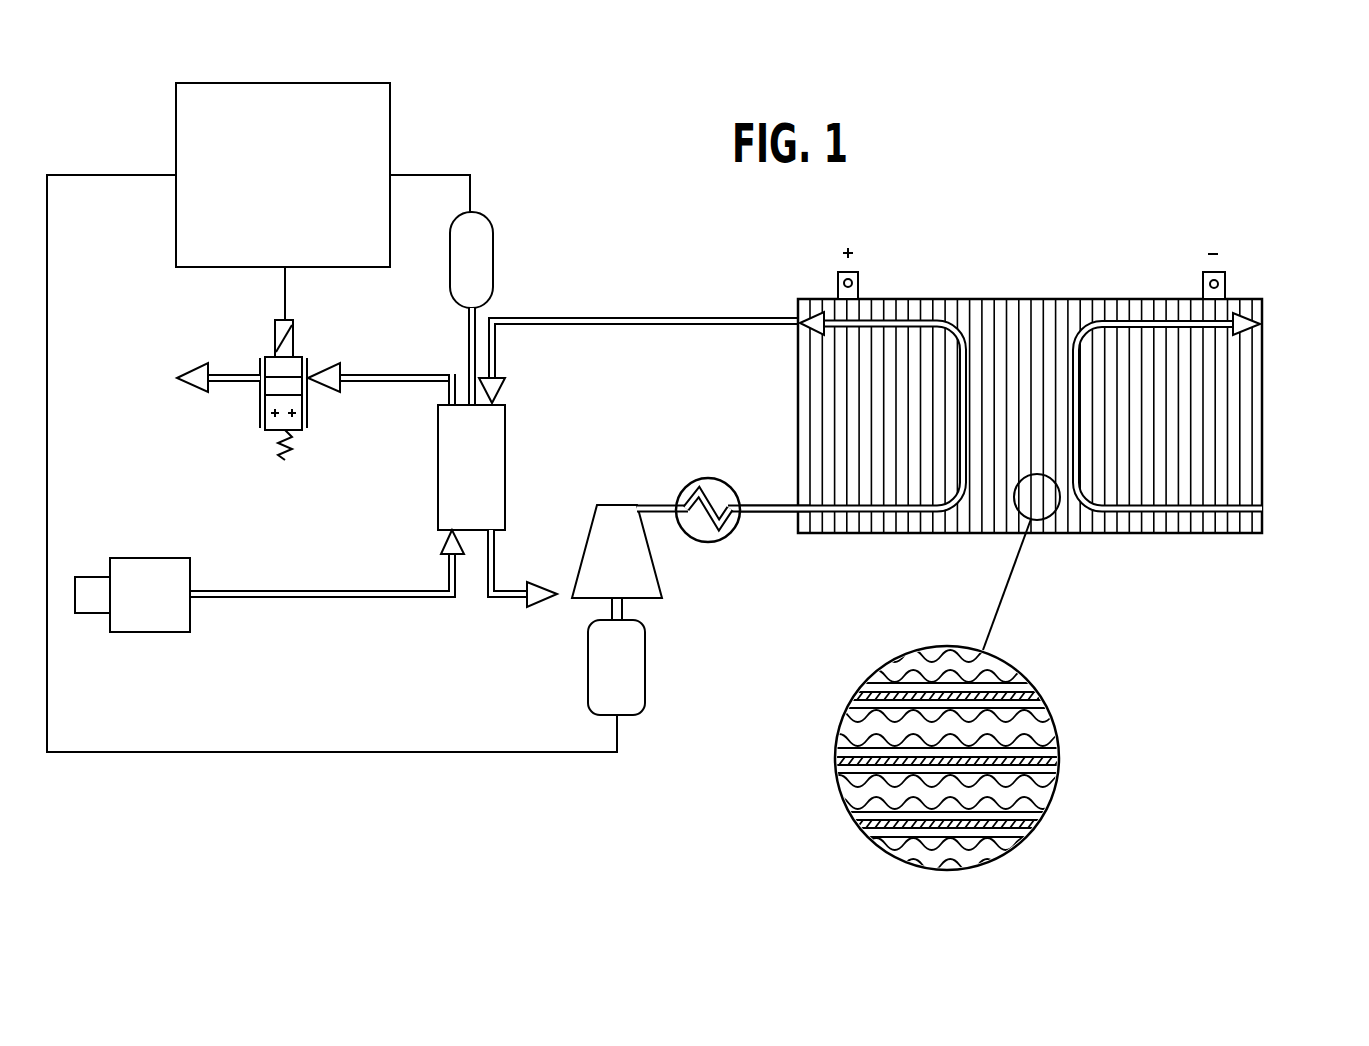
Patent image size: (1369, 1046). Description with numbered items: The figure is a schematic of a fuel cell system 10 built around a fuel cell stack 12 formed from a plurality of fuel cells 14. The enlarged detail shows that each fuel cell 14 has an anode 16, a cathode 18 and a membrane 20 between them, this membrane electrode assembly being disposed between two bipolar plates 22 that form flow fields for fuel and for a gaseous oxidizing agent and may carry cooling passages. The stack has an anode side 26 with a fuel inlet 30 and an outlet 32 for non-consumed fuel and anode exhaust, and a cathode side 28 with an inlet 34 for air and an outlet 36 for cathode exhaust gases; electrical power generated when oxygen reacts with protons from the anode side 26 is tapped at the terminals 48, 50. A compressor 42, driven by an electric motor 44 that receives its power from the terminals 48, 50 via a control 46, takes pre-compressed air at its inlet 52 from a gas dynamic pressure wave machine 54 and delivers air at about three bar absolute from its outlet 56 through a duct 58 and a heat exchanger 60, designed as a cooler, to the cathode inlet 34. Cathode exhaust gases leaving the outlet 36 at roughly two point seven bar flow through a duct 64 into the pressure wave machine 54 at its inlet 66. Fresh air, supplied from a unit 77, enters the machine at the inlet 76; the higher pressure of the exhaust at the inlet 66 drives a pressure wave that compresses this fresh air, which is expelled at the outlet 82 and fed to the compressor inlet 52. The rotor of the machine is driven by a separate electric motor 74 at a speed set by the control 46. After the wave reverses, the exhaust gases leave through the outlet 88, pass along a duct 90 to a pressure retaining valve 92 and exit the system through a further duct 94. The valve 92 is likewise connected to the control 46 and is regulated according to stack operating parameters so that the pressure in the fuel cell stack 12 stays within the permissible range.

The fuel cell system 10 is at (1032, 400).
The fuel cell stack 12 is at (1171, 540).
The fuel cells 14 is at (853, 524).
The anode 16 is at (860, 707).
The cathode 18 is at (863, 682).
The membrane 20 is at (1035, 697).
The bipolar plates 22 is at (990, 668).
The anode side 26 is at (1216, 402).
The cathode side 28 is at (828, 389).
The coolant outlet line 30 is at (1262, 510).
The outlet 32 is at (1262, 320).
The inlet 34 is at (795, 517).
The outlet 36 is at (800, 320).
The compressor 42 is at (643, 588).
The electric motor 44 is at (636, 676).
The control 46 is at (302, 105).
The terminal 48 is at (838, 280).
The terminal 50 is at (1225, 283).
The inlet of the compressor 52 is at (560, 600).
The gas dynamic pressure wave machine 54 is at (432, 463).
The outlet of the compressor 56 is at (642, 504).
The duct 58 is at (665, 504).
The heat exchanger 60 is at (705, 532).
The duct 64 is at (628, 317).
The inlet 66 is at (497, 402).
The electric motor 74 is at (480, 258).
The inlet for fresh air 76 is at (442, 540).
The pump 77 is at (153, 578).
The outlet for fresh air 82 is at (497, 540).
The outlet 88 is at (447, 397).
The duct 90 is at (372, 375).
The pressure retaining valve 92 is at (268, 430).
The further duct 94 is at (240, 372).